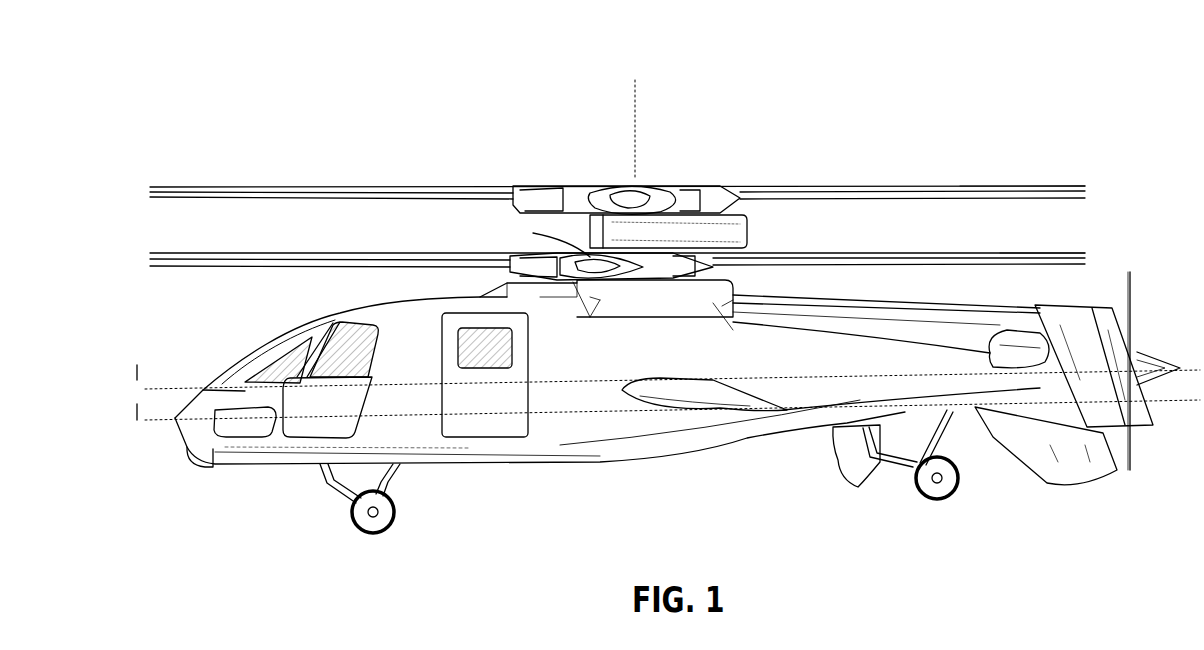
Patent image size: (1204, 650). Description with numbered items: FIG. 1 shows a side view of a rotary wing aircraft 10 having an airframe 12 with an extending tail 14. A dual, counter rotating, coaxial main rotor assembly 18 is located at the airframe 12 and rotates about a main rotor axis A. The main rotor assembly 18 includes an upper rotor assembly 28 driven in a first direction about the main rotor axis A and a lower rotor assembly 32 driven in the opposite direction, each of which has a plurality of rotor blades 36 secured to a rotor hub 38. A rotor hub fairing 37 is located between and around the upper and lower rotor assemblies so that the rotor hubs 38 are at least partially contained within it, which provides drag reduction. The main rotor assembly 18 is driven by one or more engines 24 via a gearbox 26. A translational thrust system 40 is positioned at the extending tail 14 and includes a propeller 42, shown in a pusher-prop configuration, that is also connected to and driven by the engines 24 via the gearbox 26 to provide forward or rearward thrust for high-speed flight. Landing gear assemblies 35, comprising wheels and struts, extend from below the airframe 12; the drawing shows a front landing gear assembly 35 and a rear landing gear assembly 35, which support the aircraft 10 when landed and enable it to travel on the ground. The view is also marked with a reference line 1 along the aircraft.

The rotary wing aircraft 10 is at (312, 48).
The airframe 12 is at (492, 463).
The extending tail 14 is at (836, 430).
The main rotor assembly 18 is at (574, 147).
The engine 24 is at (722, 306).
The gearbox 26 is at (600, 300).
The upper rotor assembly 28 is at (263, 176).
The lower rotor assembly 32 is at (234, 276).
The landing gear assembly 35 is at (355, 530).
The rotor blade 36 is at (908, 185).
The rotor hub fairing 37 is at (752, 229).
The rotor hub 38 is at (645, 186).
The translational thrust system 40 is at (1118, 525).
The propeller 42 is at (1133, 302).
The main rotor axis A is at (637, 118).
The reference line 1 is at (139, 390).